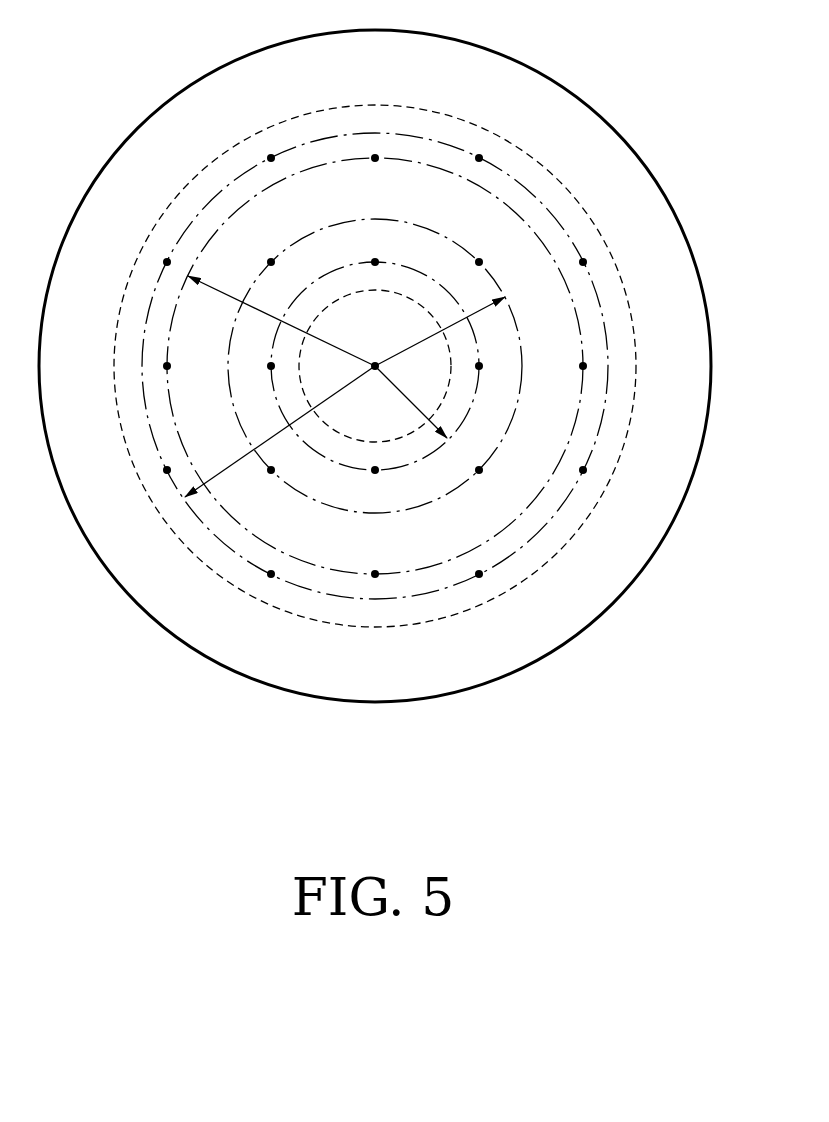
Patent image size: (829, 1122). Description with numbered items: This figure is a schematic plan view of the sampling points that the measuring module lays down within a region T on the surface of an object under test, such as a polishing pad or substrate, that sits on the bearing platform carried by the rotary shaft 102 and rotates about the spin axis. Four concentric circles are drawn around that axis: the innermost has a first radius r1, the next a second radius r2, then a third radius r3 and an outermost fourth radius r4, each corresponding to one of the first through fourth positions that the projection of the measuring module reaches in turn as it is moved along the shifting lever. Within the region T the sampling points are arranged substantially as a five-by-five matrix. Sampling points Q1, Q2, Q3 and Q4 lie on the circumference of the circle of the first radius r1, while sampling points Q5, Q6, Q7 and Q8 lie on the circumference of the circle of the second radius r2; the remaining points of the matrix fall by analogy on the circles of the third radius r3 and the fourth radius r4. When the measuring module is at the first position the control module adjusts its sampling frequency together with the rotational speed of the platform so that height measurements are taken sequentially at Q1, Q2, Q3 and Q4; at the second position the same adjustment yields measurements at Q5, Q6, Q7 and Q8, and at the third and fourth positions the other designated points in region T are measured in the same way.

The region T is at (508, 140).
The rotary shaft 102 is at (375, 366).
The first radius r1 is at (411, 402).
The second radius r2 is at (440, 331).
The third radius r3 is at (281, 321).
The fourth radius r4 is at (280, 431).
The sampling point Q1 is at (479, 366).
The sampling point Q2 is at (375, 262).
The sampling point Q3 is at (271, 366).
The sampling point Q4 is at (375, 470).
The sampling point Q5 is at (479, 262).
The sampling point Q6 is at (271, 262).
The sampling point Q7 is at (271, 470).
The sampling point Q8 is at (479, 470).